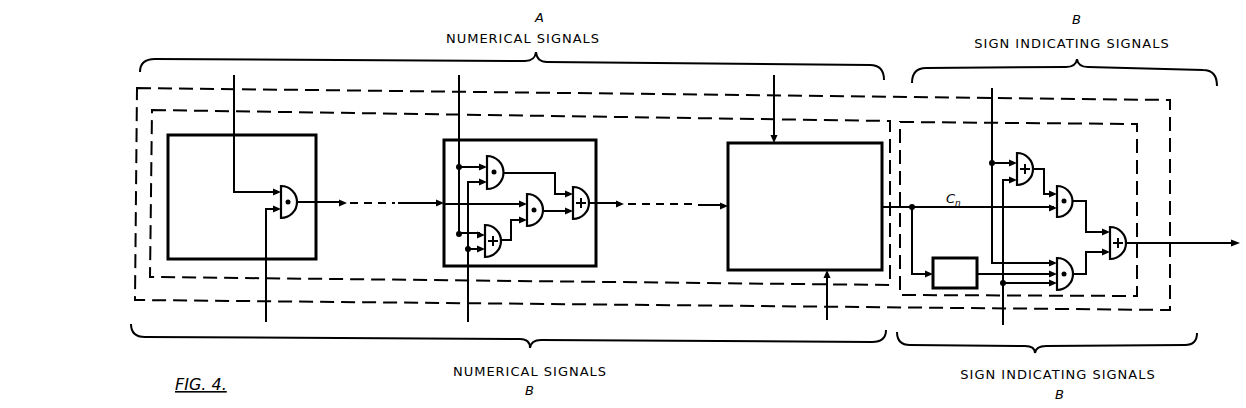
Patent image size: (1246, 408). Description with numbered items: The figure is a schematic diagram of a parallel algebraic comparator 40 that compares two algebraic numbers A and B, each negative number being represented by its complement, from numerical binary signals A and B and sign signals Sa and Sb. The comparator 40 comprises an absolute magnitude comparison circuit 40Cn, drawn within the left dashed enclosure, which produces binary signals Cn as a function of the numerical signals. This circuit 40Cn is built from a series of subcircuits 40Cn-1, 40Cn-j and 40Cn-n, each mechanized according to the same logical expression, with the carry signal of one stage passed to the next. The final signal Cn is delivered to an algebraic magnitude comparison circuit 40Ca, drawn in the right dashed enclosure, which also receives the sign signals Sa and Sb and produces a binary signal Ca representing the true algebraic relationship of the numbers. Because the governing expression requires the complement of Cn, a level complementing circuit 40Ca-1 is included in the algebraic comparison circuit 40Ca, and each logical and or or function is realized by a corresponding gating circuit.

The parallel algebraic comparator 40 is at (1157, 149).
The absolute magnitude comparison circuit 40Cn is at (703, 88).
The subcircuit 40Cn-1 is at (297, 251).
The subcircuit 40Cn-j is at (568, 260).
The subcircuit 40Cn-n is at (752, 237).
The algebraic magnitude comparison circuit 40Ca is at (1117, 290).
The level complementing circuit 40Ca-1 is at (943, 290).